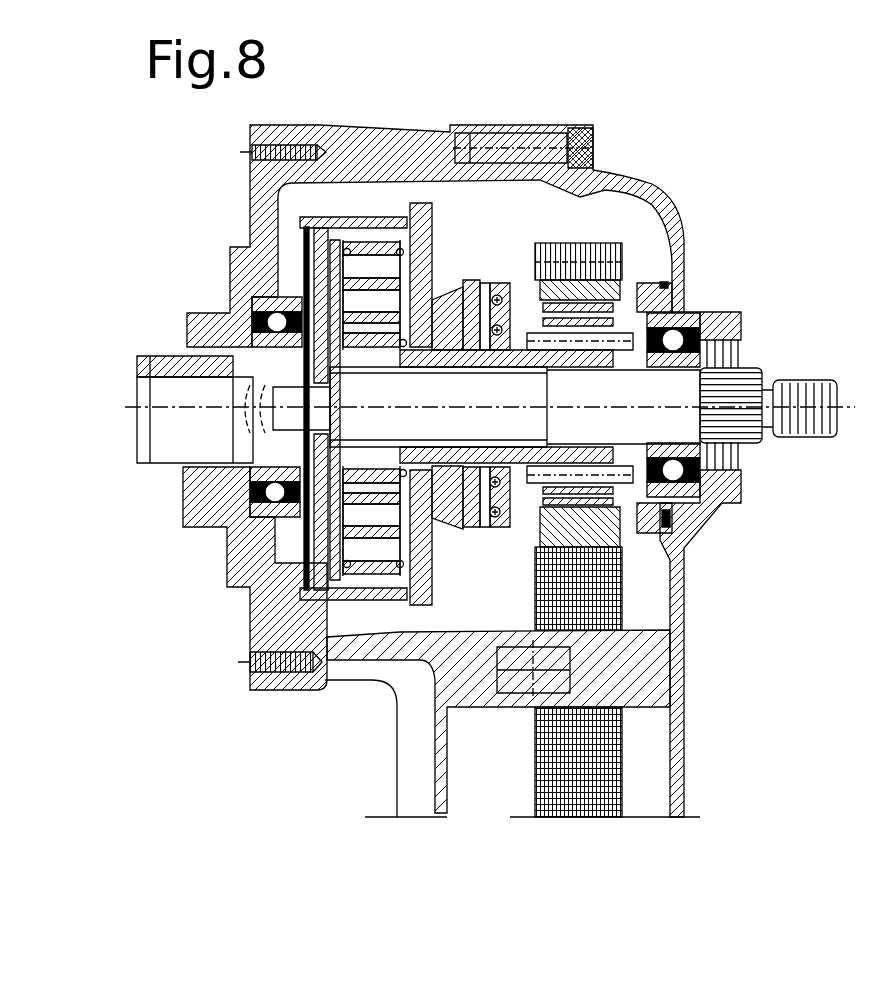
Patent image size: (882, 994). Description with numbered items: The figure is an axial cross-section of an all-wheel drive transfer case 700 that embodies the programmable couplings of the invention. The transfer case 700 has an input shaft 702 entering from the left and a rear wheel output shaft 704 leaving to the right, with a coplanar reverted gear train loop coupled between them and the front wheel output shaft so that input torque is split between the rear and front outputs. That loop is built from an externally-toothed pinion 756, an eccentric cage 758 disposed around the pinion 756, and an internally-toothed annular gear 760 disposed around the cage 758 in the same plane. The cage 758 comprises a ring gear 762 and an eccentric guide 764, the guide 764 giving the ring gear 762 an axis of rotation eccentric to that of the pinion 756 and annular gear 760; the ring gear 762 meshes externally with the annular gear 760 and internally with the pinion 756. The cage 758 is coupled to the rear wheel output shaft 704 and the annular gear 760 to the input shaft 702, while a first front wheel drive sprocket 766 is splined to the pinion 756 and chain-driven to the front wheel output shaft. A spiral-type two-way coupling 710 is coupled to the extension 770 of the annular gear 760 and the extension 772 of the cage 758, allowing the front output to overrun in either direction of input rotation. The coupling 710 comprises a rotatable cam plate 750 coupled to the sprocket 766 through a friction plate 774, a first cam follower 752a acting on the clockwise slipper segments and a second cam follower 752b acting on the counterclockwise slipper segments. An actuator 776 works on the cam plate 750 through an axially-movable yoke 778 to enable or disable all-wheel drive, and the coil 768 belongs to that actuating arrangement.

The all-wheel drive transfer case 700 is at (165, 810).
The input shaft 702 is at (173, 443).
The rear wheel output shaft 704 is at (797, 430).
The spiral-type two-way coupling 710 is at (485, 590).
The rotatable cam plate 750 is at (490, 523).
The first cam follower 752a is at (499, 298).
The second cam follower 752b is at (517, 406).
The externally-toothed pinion 756 is at (332, 297).
The eccentric cage 758 is at (230, 338).
The internally-toothed annular gear 760 is at (303, 597).
The ring gear 762 is at (370, 527).
The eccentric guide 764 is at (307, 263).
The first front wheel drive sprocket 766 is at (643, 273).
The coil 768 is at (612, 603).
The extension of the annular gear 770 is at (443, 300).
The extension of the cage 772 is at (400, 317).
The friction plate 774 is at (570, 265).
The actuator 776 is at (672, 298).
The axially-movable yoke 778 is at (683, 592).